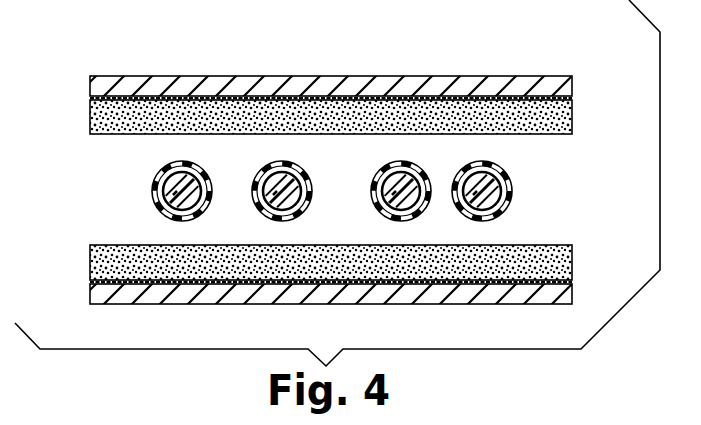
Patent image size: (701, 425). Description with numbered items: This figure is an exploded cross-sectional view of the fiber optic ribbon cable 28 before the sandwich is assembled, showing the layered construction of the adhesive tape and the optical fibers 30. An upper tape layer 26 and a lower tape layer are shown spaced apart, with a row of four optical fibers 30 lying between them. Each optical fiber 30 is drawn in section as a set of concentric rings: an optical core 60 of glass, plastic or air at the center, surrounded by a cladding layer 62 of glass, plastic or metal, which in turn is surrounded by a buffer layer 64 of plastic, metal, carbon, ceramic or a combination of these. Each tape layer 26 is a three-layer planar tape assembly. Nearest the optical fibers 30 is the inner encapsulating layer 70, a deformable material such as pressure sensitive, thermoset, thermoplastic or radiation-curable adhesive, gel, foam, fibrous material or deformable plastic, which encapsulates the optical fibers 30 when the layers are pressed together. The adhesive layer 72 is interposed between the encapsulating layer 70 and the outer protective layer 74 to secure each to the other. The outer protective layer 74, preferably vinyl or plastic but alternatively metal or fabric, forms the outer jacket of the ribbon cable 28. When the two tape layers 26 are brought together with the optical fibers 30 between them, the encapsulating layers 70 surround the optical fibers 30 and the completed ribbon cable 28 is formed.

The tape layer 26 is at (339, 103).
The ribbon cable 28 is at (86, 250).
The optical fibers 30 is at (252, 162).
The optical core 60 is at (493, 217).
The cladding layer 62 is at (499, 191).
The buffer layer 64 is at (498, 170).
The inner encapsulating layer 70 is at (568, 132).
The adhesive layer 72 is at (569, 99).
The outer protective layer 74 is at (566, 87).